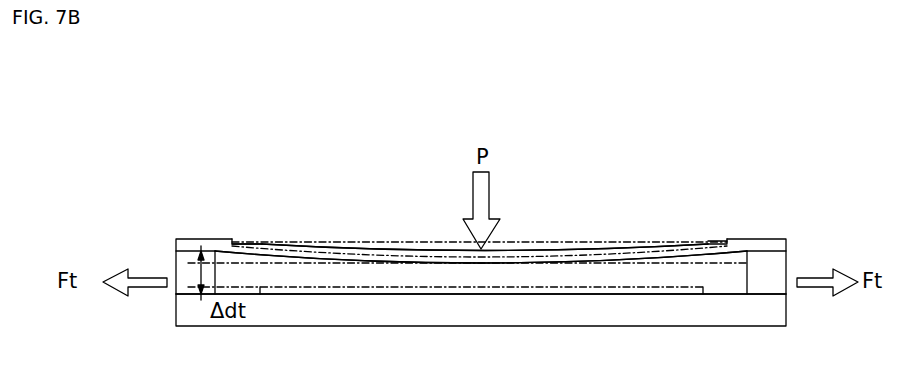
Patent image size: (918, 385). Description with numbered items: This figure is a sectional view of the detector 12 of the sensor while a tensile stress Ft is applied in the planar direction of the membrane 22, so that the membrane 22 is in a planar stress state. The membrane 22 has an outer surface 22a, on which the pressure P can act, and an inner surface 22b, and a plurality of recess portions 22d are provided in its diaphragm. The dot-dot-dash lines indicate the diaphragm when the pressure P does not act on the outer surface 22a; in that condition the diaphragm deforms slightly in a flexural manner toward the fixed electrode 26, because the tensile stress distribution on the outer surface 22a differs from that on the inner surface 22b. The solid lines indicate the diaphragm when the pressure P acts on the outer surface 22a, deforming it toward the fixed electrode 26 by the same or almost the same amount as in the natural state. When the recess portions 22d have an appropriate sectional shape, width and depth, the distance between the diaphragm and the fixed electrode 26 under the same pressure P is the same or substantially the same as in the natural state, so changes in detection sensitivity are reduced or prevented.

The detector 12 is at (175, 200).
The membrane 22 is at (397, 242).
The outer surface 22a is at (626, 246).
The inner surface 22b is at (645, 260).
The recess portions 22d is at (237, 242).
The fixed electrode 26 is at (477, 296).